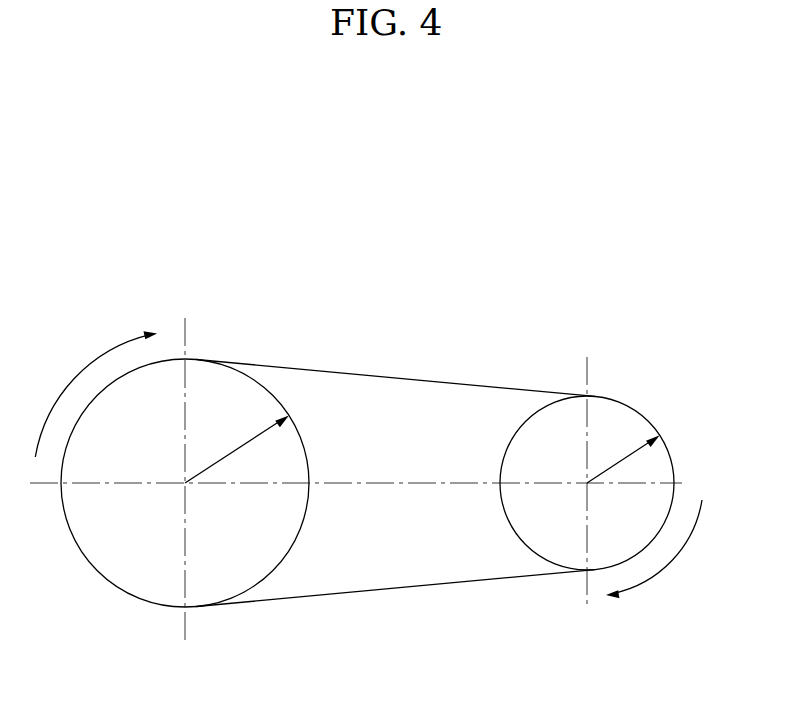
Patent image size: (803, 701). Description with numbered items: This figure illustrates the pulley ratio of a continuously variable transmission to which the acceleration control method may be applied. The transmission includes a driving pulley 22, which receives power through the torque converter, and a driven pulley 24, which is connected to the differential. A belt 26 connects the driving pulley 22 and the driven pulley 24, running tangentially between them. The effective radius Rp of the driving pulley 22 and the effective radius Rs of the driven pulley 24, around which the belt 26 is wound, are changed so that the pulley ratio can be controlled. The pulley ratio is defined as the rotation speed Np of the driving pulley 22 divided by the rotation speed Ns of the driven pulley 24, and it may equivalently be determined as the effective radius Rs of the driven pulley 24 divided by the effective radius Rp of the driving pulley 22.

The driving pulley 22 is at (95, 596).
The driven pulley 24 is at (688, 446).
The belt 26 is at (392, 377).